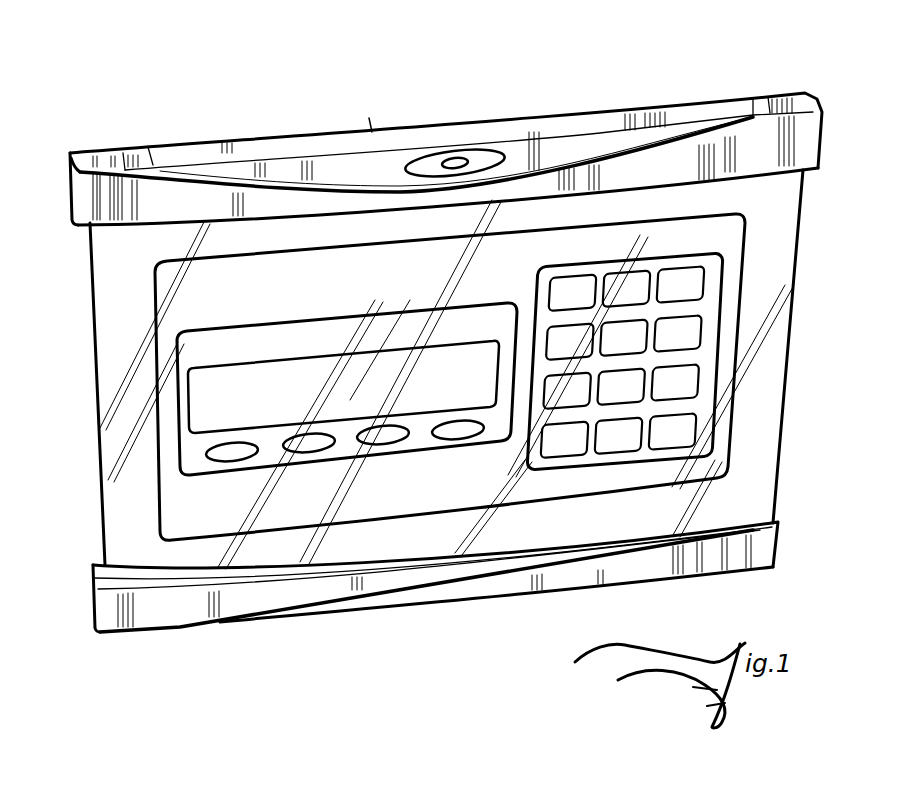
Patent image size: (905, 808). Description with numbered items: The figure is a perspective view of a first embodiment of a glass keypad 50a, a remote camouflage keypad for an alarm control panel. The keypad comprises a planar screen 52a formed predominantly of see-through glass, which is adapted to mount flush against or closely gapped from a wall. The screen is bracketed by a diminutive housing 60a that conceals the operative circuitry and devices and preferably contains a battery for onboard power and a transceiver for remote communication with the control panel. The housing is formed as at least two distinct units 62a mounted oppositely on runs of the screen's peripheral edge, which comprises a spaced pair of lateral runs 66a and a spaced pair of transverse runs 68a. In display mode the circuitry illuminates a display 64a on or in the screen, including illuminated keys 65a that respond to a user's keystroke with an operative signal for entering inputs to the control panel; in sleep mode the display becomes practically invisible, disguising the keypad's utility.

The glass keypad 50a is at (643, 88).
The planar screen 52a is at (92, 330).
The diminutive housing 60a is at (415, 137).
The housing unit 62a is at (415, 137).
The display 64a is at (208, 292).
The illuminated keys 65a is at (708, 294).
The lateral run 66a is at (790, 322).
The transverse run 68a is at (368, 118).